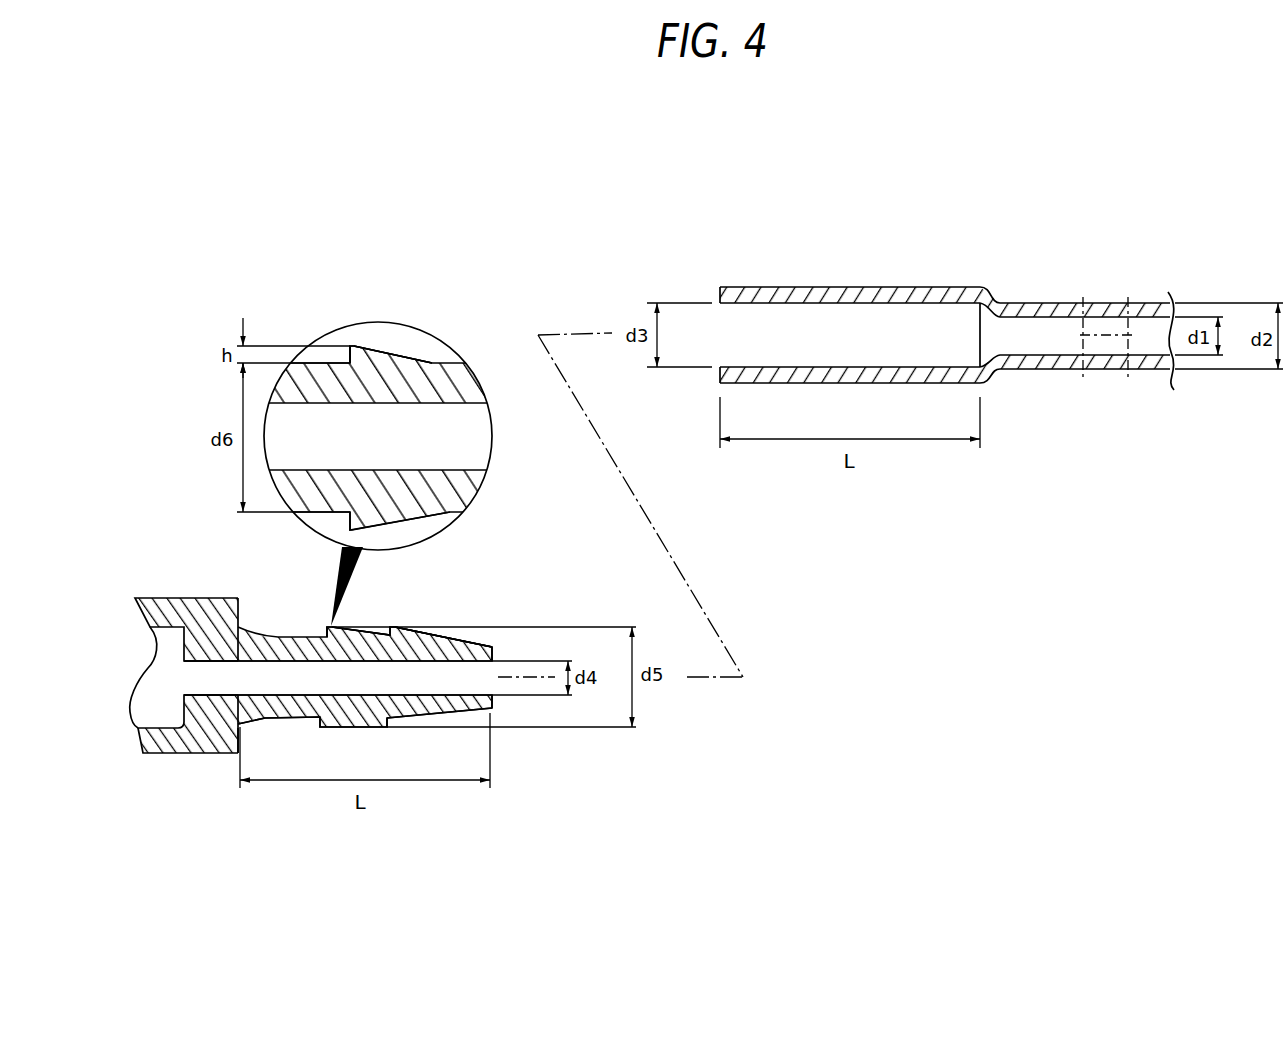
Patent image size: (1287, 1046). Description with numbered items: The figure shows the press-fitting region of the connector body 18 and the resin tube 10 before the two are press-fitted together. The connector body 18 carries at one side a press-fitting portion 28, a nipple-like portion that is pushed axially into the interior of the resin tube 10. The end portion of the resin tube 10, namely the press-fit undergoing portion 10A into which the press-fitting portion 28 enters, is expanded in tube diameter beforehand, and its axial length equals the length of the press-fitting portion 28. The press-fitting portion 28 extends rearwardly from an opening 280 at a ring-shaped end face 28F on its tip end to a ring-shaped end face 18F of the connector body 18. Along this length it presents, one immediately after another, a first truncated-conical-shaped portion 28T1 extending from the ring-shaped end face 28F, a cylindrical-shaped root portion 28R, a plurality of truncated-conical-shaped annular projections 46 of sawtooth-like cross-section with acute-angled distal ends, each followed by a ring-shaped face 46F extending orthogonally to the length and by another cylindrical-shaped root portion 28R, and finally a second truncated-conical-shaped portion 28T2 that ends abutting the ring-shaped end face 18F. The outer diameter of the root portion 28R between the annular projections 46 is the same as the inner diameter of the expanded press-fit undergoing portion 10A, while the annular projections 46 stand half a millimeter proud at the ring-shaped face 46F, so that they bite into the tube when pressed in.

The resin tube 10 is at (968, 248).
The press-fit undergoing portion 10A is at (835, 378).
The connector body 18 is at (197, 578).
The ring-shaped end face 18F is at (242, 740).
The press-fitting portion 28 is at (434, 353).
The ring-shaped end face 28F is at (494, 652).
The cylindrical-shaped root portion 28R is at (349, 346).
The first truncated-conical-shaped portion 28T1 is at (467, 636).
The second truncated-conical-shaped portion 28T2 is at (258, 723).
The opening 280 is at (489, 688).
The annular projection 46 is at (351, 346).
The ring-shaped face 46F is at (348, 347).